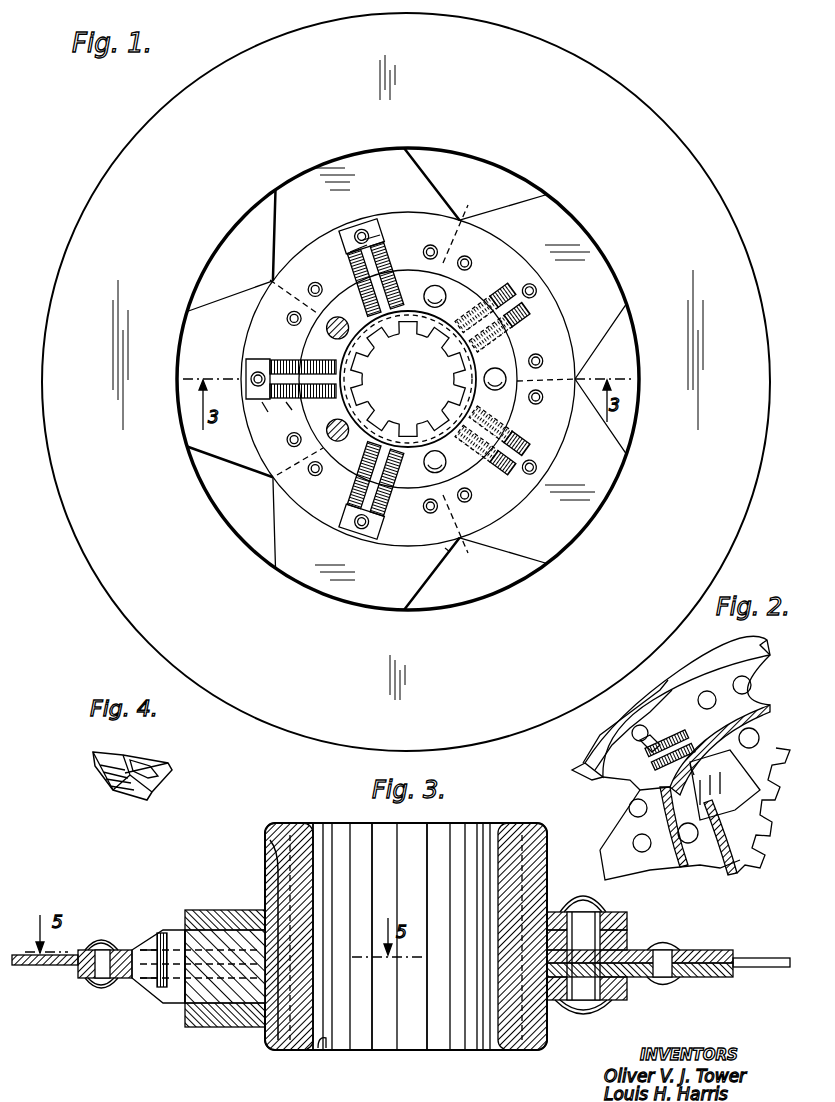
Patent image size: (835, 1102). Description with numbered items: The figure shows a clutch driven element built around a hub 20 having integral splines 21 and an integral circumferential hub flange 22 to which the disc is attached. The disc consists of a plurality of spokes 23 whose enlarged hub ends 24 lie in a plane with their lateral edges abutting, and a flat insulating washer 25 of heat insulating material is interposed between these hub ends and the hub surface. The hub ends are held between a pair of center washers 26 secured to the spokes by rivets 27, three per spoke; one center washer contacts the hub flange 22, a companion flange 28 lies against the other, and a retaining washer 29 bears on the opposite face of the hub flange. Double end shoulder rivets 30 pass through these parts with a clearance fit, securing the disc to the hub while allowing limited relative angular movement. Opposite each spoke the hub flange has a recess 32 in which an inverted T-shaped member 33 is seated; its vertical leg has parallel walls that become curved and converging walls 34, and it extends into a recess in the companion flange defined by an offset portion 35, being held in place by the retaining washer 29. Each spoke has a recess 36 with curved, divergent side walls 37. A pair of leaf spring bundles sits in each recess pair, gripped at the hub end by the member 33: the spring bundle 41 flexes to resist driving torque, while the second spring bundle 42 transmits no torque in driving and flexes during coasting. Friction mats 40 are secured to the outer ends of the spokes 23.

In FIG. 1, the hub 20 is at (327, 468).
In FIG. 2, the hub 20 is at (733, 835).
In FIG. 3, the hub 20 is at (300, 1050).
In FIG. 1, the splines 21 is at (447, 547).
In FIG. 3, the splines 21 is at (322, 1040).
In FIG. 1, the hub flange 22 is at (312, 347).
In FIG. 3, the hub flange 22 is at (628, 938).
In FIG. 1, the spokes 23 is at (214, 451).
In FIG. 2, the spokes 23 is at (583, 763).
In FIG. 3, the spokes 23 is at (30, 967).
In FIG. 1, the hub ends 24 is at (280, 303).
In FIG. 3, the hub ends 24 is at (698, 977).
In FIG. 3, the insulating washer 25 is at (617, 1001).
In FIG. 1, the center washers 26 is at (252, 327).
In FIG. 2, the center washers 26 is at (770, 660).
In FIG. 3, the center washers 26 is at (720, 948).
In FIG. 1, the rivets 27 is at (366, 229).
In FIG. 3, the rivets 27 is at (672, 950).
In FIG. 2, the companion flange 28 is at (727, 723).
In FIG. 3, the companion flange 28 is at (628, 987).
In FIG. 1, the retaining washer 29 is at (455, 292).
In FIG. 3, the retaining washer 29 is at (628, 913).
In FIG. 1, the double end shoulder rivets 30 is at (495, 375).
In FIG. 3, the double end shoulder rivets 30 is at (575, 893).
In FIG. 1, the recess 32 is at (322, 398).
In FIG. 1, the inverted T-shaped member 33 is at (294, 400).
In FIG. 2, the inverted T-shaped member 33 is at (685, 740).
In FIG. 3, the inverted T-shaped member 33 is at (193, 987).
In FIG. 4, the inverted T-shaped member 33 is at (158, 790).
In FIG. 4, the curved converging walls 34 is at (128, 752).
In FIG. 2, the offset portion 35 is at (698, 778).
In FIG. 3, the offset portion 35 is at (197, 1027).
In FIG. 1, the recess 36 is at (358, 247).
In FIG. 3, the recess 36 is at (130, 948).
In FIG. 1, the side walls 37 is at (290, 405).
In FIG. 1, the friction mats 40 is at (575, 77).
In FIG. 1, the spring bundle 41 is at (246, 360).
In FIG. 2, the spring bundle 41 is at (668, 730).
In FIG. 3, the spring bundle 41 is at (163, 930).
In FIG. 1, the second spring bundle 42 is at (270, 400).
In FIG. 2, the second spring bundle 42 is at (660, 762).